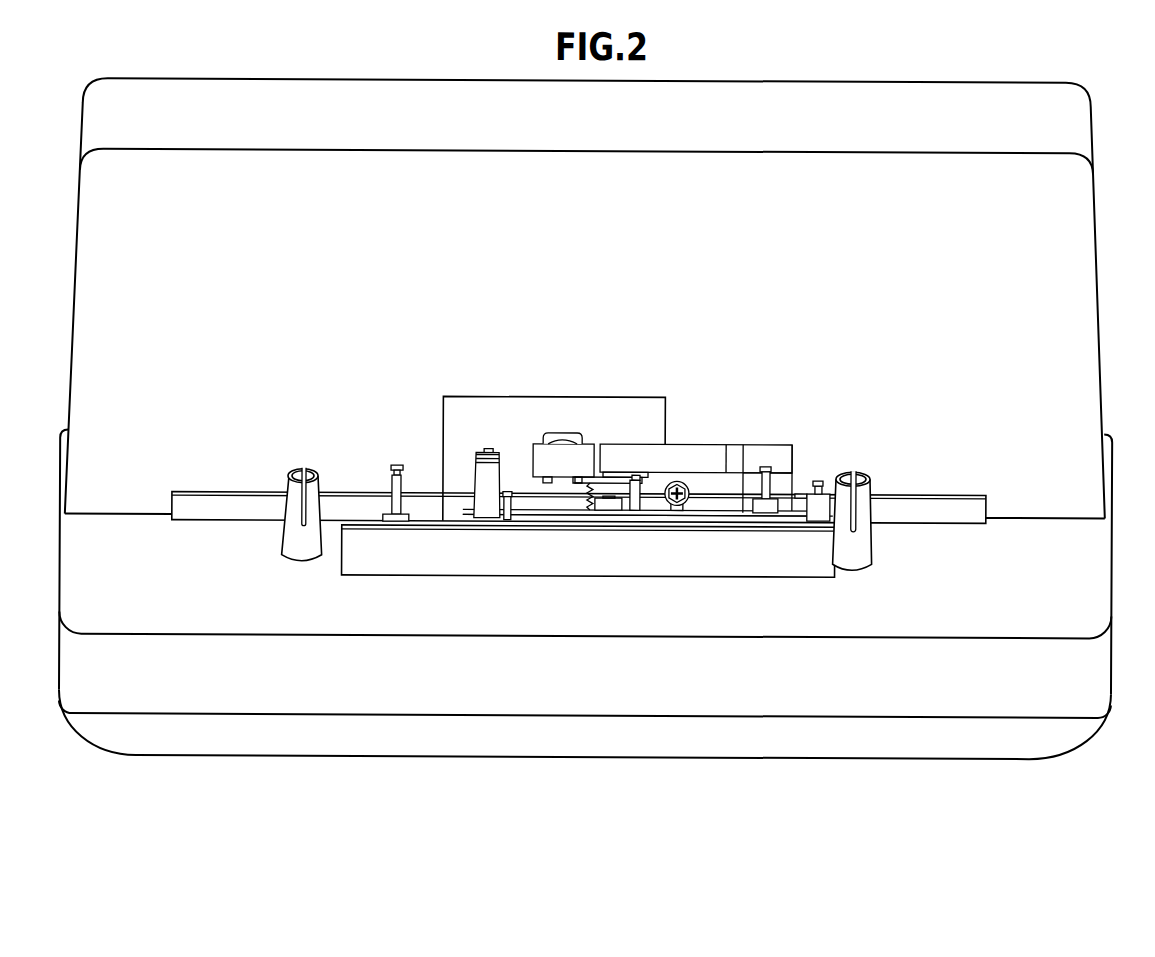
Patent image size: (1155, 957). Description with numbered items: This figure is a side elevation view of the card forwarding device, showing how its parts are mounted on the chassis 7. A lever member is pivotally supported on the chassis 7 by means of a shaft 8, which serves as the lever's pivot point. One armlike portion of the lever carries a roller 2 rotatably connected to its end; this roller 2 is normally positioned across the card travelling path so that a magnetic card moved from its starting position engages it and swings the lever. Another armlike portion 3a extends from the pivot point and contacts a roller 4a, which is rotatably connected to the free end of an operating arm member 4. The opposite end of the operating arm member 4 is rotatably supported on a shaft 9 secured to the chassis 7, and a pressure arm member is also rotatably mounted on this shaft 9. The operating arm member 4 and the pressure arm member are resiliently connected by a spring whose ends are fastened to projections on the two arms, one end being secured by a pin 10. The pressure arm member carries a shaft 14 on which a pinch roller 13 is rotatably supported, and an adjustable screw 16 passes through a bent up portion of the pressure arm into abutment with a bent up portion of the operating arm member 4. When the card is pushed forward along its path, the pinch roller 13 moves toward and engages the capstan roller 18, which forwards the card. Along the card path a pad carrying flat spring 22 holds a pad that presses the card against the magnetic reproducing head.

The roller 2 is at (609, 506).
The armlike portion 3a is at (802, 512).
The operating arm member 4 is at (775, 518).
The roller 4a is at (825, 501).
The chassis 7 is at (260, 616).
The shaft 8 is at (762, 478).
The shaft 9 is at (480, 462).
The pin 10 is at (635, 505).
The pinch roller 13 is at (562, 467).
The shaft 14 is at (557, 445).
The adjustable screw 16 is at (678, 502).
The capstan roller 18 is at (577, 442).
The pad carrying flat spring 22 is at (653, 463).